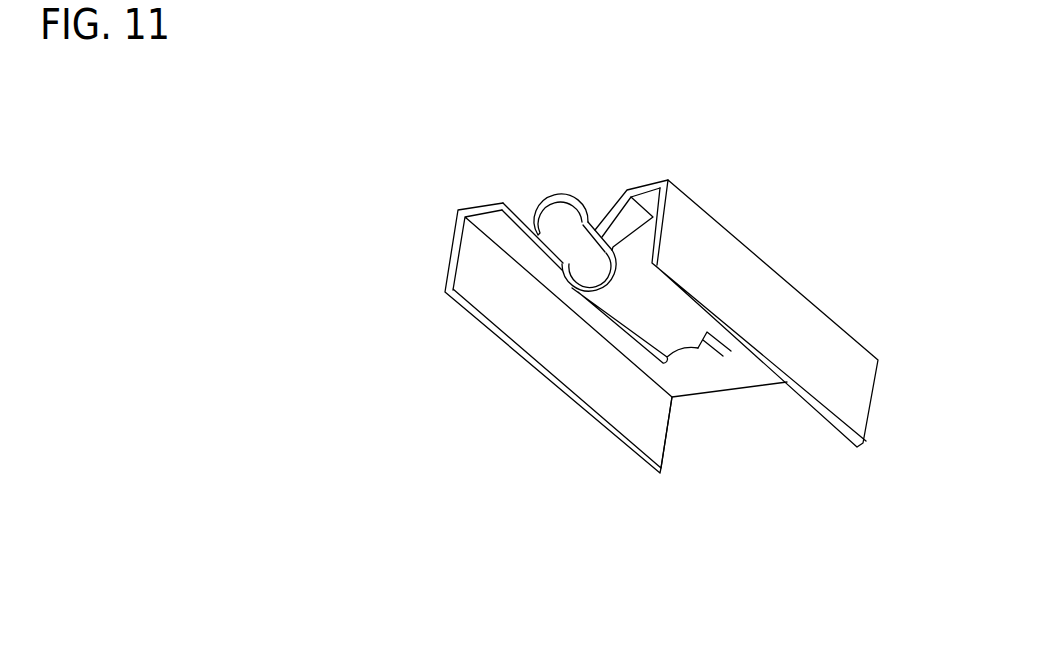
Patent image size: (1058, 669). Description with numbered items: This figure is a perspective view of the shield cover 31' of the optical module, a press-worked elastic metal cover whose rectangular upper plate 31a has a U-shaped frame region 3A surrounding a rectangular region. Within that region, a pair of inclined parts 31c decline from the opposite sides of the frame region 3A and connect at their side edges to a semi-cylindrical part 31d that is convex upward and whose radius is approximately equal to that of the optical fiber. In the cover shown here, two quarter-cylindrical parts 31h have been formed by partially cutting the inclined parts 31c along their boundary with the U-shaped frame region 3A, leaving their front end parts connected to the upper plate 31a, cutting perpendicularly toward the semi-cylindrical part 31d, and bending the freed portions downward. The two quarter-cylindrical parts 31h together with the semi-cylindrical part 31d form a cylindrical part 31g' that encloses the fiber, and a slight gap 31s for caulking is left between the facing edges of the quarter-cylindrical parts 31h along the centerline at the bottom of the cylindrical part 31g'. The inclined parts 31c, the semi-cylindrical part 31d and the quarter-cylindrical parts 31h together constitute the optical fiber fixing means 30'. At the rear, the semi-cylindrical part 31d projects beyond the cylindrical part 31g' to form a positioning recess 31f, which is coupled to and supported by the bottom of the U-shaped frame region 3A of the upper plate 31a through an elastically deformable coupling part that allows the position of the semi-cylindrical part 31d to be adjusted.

The shield cover 31' is at (310, 127).
The U-shaped frame region 3A is at (657, 181).
The inclined parts 31c is at (530, 226).
The semi-cylindrical part 31d is at (523, 207).
The quarter-cylindrical parts 31h is at (615, 280).
The cylindrical part 31g' is at (550, 417).
The upper plate 31a is at (643, 182).
The gap 31s is at (614, 290).
The positioning recess 31f is at (712, 350).
The optical fiber fixing means 30' is at (439, 581).